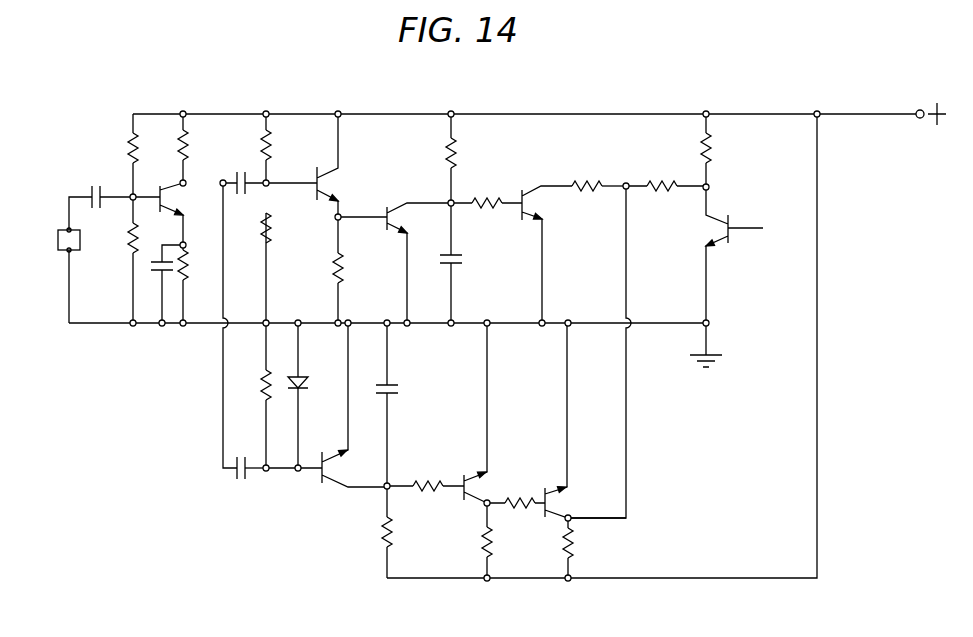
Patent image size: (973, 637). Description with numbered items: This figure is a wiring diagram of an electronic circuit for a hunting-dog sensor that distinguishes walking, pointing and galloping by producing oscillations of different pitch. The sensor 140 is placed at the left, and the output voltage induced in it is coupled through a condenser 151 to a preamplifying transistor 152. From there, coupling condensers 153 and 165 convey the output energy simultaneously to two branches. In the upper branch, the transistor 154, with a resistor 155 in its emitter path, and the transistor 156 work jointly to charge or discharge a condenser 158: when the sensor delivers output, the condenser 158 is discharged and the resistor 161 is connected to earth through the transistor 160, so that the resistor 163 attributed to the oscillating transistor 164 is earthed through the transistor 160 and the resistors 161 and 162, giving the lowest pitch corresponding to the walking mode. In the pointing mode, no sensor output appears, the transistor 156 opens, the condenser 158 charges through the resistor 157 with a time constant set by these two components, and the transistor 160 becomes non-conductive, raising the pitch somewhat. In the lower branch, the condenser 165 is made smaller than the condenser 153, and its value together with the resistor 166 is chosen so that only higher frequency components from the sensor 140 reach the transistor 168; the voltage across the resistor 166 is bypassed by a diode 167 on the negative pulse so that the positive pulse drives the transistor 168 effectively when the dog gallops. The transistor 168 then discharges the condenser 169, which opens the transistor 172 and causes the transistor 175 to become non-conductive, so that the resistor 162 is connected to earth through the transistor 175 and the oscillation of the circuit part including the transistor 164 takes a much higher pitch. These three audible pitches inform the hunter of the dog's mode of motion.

The sensor 140 is at (58, 240).
The condenser 151 is at (103, 188).
The preamplifying transistor 152 is at (160, 192).
The coupling condenser 153 is at (240, 172).
The transistor 154 is at (317, 174).
The resistor 155 is at (334, 266).
The transistor 156 is at (387, 207).
The resistor 157 is at (458, 155).
The condenser 158 is at (462, 262).
The transistor 160 is at (537, 204).
The resistor 161 is at (579, 184).
The resistor 162 is at (665, 176).
The resistor 163 is at (709, 152).
The transistor 164 is at (730, 224).
The coupling condenser 165 is at (247, 476).
The resistor 166 is at (260, 382).
The diode 167 is at (305, 383).
The transistor 168 is at (322, 482).
The condenser 169 is at (390, 386).
The transistor 172 is at (462, 478).
The transistor 175 is at (542, 492).